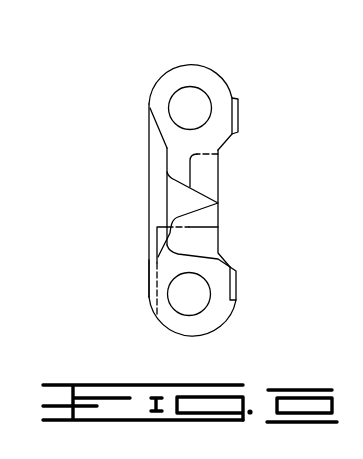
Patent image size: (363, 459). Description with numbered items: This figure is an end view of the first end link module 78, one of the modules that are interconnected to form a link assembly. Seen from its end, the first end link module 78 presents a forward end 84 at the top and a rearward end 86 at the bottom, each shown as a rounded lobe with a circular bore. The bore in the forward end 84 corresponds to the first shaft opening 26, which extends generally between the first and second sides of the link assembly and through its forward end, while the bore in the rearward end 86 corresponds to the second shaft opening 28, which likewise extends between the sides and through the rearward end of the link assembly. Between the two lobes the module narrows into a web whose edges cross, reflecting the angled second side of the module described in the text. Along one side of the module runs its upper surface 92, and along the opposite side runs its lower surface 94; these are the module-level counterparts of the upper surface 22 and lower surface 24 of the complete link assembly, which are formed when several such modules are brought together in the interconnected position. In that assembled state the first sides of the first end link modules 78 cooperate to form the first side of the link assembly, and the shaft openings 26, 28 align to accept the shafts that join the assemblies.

The upper surface 22 is at (219, 184).
The lower surface 24 is at (167, 200).
The first shaft opening 26 is at (188, 93).
The second shaft opening 28 is at (176, 309).
The first end link module 78 is at (146, 277).
The forward end 84 is at (181, 59).
The rearward end 86 is at (202, 342).
The upper surface 92 is at (219, 170).
The lower surface 94 is at (167, 181).